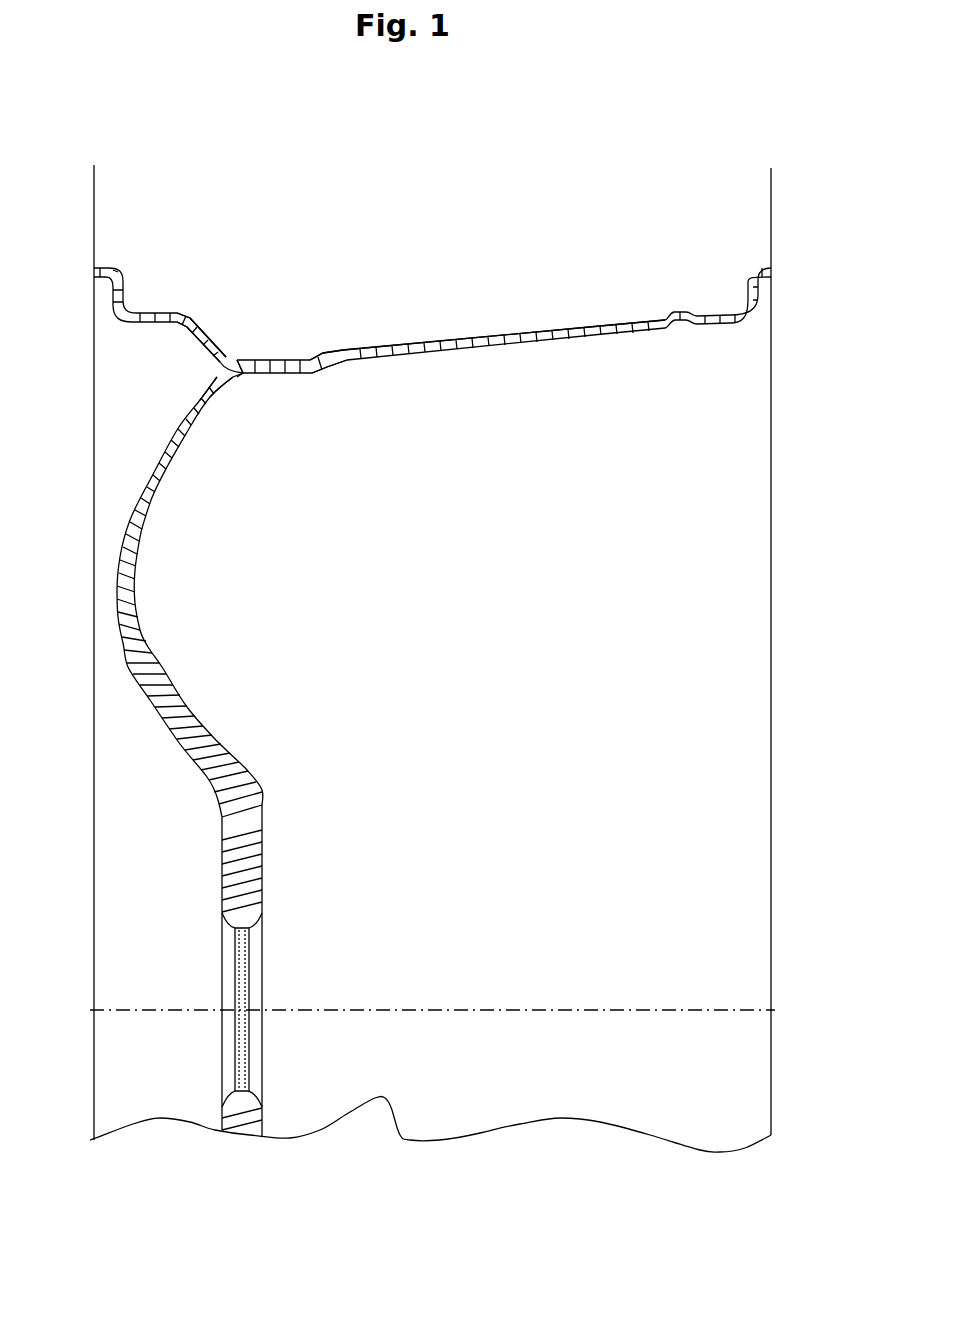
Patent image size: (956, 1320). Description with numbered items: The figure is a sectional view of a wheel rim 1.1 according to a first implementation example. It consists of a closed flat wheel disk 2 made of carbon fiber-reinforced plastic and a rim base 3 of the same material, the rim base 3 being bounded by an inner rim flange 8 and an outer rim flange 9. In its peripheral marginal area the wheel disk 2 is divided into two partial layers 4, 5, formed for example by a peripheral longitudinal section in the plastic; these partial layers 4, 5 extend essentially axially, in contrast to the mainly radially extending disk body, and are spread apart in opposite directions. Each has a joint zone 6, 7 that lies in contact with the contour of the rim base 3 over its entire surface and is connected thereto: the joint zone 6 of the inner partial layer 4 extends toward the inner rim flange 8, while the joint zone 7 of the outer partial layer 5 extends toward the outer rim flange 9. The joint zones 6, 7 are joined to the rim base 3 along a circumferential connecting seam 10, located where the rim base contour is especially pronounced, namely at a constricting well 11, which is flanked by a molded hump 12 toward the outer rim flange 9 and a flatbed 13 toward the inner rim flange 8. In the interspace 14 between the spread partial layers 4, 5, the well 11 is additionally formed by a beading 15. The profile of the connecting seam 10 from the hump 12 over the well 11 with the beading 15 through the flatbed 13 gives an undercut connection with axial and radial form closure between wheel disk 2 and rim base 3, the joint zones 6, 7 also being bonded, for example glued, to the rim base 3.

The wheel rim 1.1 is at (330, 1140).
The wheel disk 2 is at (220, 762).
The rim base 3 is at (598, 328).
The inner partial layer 4 is at (233, 378).
The outer partial layer 5 is at (220, 377).
The joint zone of inner partial layer 6 is at (303, 377).
The joint zone of outer partial layer 7 is at (222, 350).
The inner rim flange 8 is at (769, 634).
The outer rim flange 9 is at (99, 637).
The connecting seam 10 is at (251, 318).
The well 11 is at (287, 357).
The hump 12 is at (184, 313).
The flatbed 13 is at (598, 328).
The interspace 14 is at (238, 378).
The beading 15 is at (236, 360).